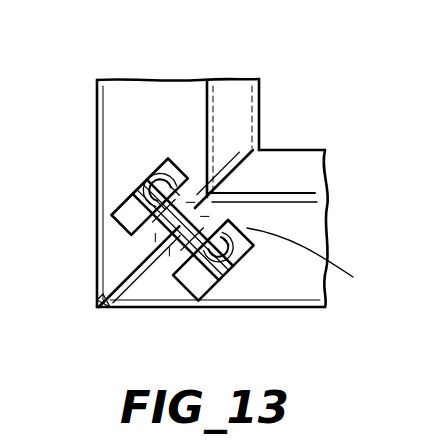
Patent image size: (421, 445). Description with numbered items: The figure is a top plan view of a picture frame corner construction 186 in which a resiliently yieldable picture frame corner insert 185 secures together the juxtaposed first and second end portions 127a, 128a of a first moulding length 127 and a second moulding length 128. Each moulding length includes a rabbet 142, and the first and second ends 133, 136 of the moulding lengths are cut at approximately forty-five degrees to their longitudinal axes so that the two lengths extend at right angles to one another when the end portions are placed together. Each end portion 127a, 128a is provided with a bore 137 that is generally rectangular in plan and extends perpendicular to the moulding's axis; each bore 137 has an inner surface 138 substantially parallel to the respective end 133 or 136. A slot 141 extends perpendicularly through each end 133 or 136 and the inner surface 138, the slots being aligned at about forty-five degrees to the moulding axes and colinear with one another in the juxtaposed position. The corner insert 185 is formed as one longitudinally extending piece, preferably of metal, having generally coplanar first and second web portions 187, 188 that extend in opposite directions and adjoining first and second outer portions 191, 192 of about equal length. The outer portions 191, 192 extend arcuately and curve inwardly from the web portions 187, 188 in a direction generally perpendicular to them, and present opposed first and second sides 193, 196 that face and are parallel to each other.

The second end portion 128a is at (97, 96).
The second side 196 is at (183, 167).
The second moulding length 128 is at (193, 78).
The rabbet 142 is at (252, 90).
The picture frame corner construction 186 is at (325, 90).
The bore 137 is at (128, 195).
The second outer portion 192 is at (150, 184).
The second web portion 188 is at (216, 177).
The second end 136 is at (265, 150).
The inner surface 138 is at (113, 218).
The first web portion 187 is at (230, 217).
The first moulding length 127 is at (328, 208).
The slot 141 is at (143, 242).
The first outer portion 191 is at (232, 262).
The first side 193 is at (319, 261).
The first end 133 is at (97, 301).
The picture frame corner insert 185 is at (168, 245).
The first end portion 127a is at (313, 313).